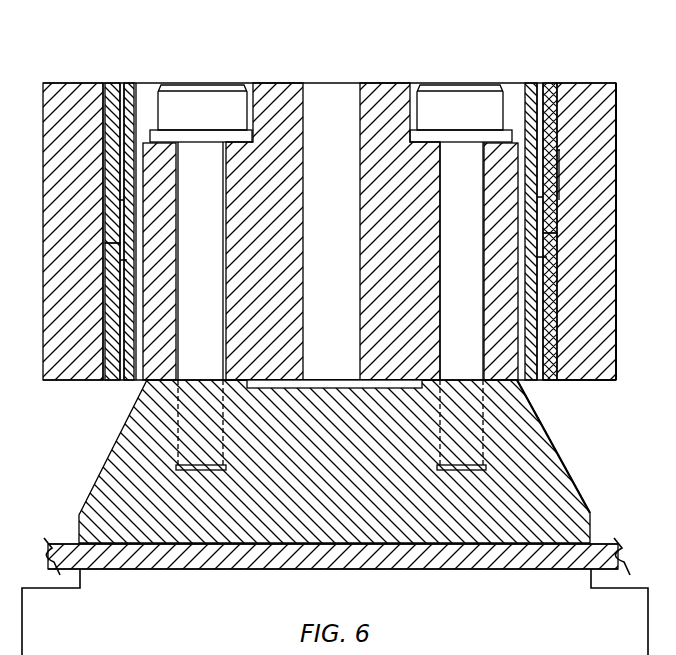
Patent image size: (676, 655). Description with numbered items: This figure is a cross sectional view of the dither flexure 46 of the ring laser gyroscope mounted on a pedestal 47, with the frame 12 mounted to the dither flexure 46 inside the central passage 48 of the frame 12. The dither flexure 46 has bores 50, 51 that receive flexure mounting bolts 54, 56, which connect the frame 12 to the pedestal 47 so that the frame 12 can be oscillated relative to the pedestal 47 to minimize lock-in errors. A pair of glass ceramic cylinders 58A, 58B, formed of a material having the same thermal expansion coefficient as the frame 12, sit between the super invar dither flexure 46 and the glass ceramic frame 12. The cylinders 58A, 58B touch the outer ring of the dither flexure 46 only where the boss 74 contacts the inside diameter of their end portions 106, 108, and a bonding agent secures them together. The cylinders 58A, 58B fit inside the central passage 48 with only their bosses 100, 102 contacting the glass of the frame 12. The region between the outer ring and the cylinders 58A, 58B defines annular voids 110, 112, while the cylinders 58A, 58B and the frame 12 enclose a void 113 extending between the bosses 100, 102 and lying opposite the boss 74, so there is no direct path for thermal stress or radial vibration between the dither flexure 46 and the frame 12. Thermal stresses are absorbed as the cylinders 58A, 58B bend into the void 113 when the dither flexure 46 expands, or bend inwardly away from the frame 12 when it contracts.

The frame 12 is at (43, 256).
The dither flexure 46 is at (394, 73).
The pedestal 47 is at (122, 432).
The central passage 48 is at (112, 83).
The bore 50 is at (178, 293).
The bore 51 is at (483, 292).
The flexure mounting bolt 54 is at (217, 83).
The flexure mounting bolt 56 is at (462, 83).
The glass ceramic cylinder 58A is at (561, 83).
The glass ceramic cylinder 58B is at (557, 381).
The boss 74 is at (118, 213).
The boss 100 is at (110, 120).
The boss 102 is at (107, 333).
The end portion 106 is at (553, 198).
The end portion 108 is at (555, 253).
The annular void 110 is at (541, 83).
The annular void 112 is at (540, 382).
The void 113 is at (558, 152).